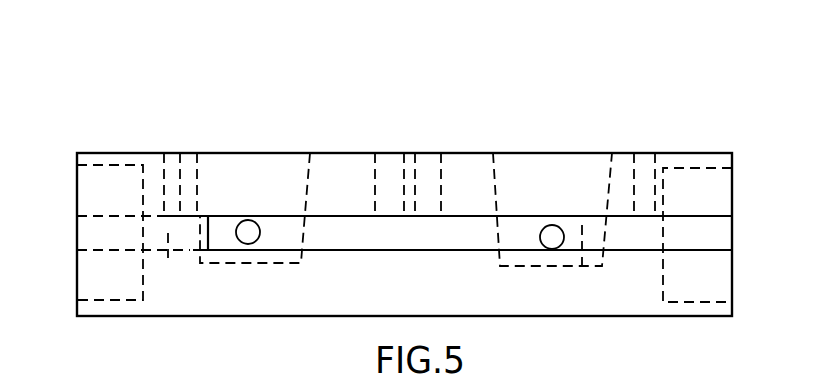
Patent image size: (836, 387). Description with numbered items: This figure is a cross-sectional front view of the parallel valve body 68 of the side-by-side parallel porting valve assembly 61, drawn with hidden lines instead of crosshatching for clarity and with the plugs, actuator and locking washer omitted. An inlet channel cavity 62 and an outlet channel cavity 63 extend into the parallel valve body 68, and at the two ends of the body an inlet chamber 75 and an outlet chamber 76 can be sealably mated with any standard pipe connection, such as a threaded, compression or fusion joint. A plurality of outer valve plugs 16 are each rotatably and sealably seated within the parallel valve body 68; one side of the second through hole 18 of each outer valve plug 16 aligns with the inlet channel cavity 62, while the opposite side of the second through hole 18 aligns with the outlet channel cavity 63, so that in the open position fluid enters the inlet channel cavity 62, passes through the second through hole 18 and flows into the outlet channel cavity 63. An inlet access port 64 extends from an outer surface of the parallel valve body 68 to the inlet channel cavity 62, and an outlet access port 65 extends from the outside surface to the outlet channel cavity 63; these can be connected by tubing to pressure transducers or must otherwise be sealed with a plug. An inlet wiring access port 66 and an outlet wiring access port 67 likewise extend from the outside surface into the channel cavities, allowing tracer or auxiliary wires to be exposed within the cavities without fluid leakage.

The side-by-side parallel porting valve assembly 61 is at (237, 123).
The outer valve plug 16 is at (278, 167).
The second through hole 18 is at (244, 242).
The inlet channel cavity 62 is at (168, 258).
The outlet channel cavity 63 is at (642, 242).
The inlet access port 64 is at (435, 163).
The outlet access port 65 is at (392, 162).
The inlet wiring access port 66 is at (173, 157).
The outlet wiring access port 67 is at (646, 168).
The parallel valve body 68 is at (303, 302).
The inlet chamber 75 is at (100, 193).
The outlet chamber 76 is at (718, 200).